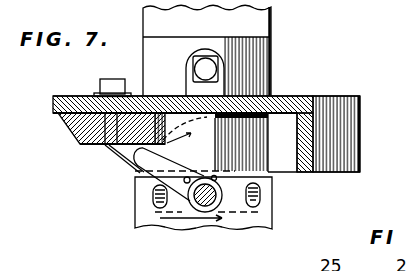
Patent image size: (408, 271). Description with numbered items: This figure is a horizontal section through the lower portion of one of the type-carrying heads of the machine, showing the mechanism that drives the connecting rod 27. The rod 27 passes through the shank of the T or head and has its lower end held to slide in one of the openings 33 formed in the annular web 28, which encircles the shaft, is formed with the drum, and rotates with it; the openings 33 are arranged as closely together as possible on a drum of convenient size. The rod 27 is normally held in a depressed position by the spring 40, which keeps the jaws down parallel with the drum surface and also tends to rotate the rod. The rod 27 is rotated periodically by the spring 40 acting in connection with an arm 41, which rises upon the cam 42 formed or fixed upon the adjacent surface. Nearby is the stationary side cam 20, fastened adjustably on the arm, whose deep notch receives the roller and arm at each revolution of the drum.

The stationary side cam 20 is at (327, 174).
The connecting rod 27 is at (203, 201).
The annular web 28 is at (162, 226).
The openings 33 is at (160, 198).
The spring 40 is at (223, 207).
The arm 41 is at (163, 168).
The cam 42 is at (100, 146).